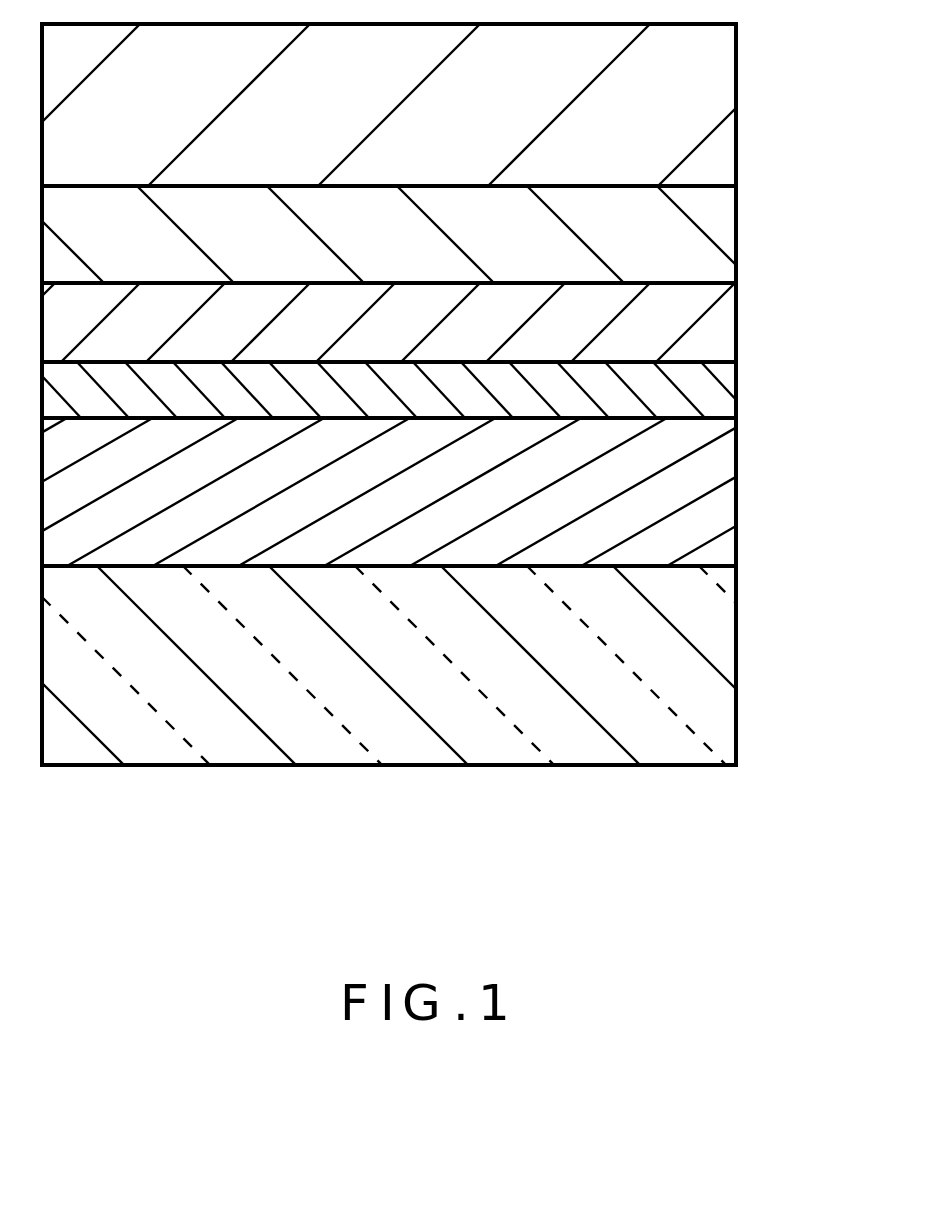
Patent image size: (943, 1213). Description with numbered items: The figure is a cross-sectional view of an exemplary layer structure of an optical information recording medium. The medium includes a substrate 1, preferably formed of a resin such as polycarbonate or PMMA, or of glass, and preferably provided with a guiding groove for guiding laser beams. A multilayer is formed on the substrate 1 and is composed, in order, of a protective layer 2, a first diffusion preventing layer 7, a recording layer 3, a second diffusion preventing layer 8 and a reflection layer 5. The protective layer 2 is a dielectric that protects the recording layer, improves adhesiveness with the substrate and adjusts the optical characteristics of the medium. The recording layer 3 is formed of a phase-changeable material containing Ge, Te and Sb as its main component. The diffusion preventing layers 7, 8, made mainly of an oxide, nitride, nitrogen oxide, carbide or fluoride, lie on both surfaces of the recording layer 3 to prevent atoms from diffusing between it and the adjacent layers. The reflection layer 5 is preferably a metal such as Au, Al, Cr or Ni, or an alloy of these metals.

The substrate 1 is at (668, 663).
The protective layer 2 is at (660, 504).
The recording layer 3 is at (668, 329).
The reflection layer 5 is at (685, 105).
The first diffusion preventing layer 7 is at (672, 390).
The second diffusion preventing layer 8 is at (668, 242).